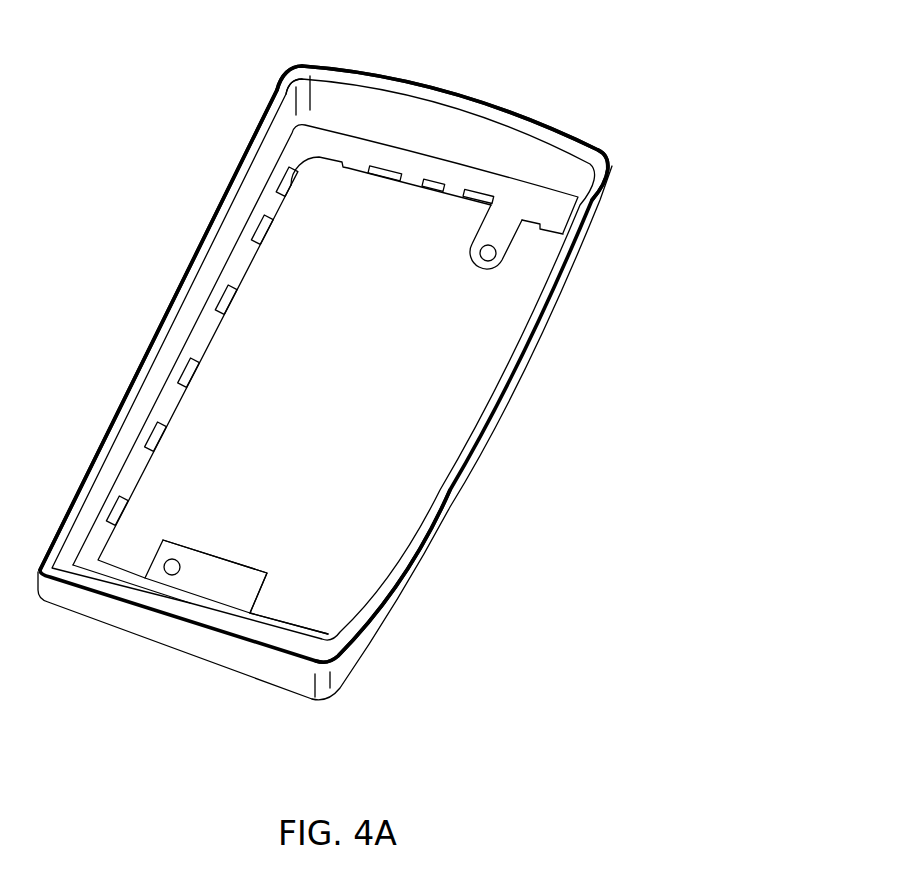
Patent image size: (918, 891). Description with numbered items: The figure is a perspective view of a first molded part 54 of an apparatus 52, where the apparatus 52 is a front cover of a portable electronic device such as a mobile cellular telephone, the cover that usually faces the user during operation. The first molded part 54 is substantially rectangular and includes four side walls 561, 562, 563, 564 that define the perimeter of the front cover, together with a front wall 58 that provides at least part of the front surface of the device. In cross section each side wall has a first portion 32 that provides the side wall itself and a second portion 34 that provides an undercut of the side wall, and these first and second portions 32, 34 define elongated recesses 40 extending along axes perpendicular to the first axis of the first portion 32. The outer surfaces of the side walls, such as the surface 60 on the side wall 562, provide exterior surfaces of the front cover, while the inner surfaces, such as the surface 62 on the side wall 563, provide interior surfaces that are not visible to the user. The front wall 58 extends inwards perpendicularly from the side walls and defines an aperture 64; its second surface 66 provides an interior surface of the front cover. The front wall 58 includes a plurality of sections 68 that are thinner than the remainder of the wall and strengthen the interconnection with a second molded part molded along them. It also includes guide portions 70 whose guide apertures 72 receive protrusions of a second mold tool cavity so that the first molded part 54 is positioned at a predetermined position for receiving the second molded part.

The first portion 32 is at (328, 88).
The second portion 34 is at (345, 66).
The recess 40 is at (465, 141).
The apparatus 52 is at (673, 153).
The first molded part 54 is at (543, 335).
The side wall 561 is at (205, 650).
The side wall 562 is at (433, 535).
The side wall 563 is at (448, 90).
The side wall 564 is at (165, 316).
The front wall 58 is at (245, 572).
The outer surface 60 is at (357, 647).
The inner surface 62 is at (570, 160).
The aperture 64 is at (367, 378).
The second surface 66 is at (292, 635).
The sections 68 is at (428, 192).
The guide portions 70 is at (490, 268).
The guide apertures 72 is at (482, 253).